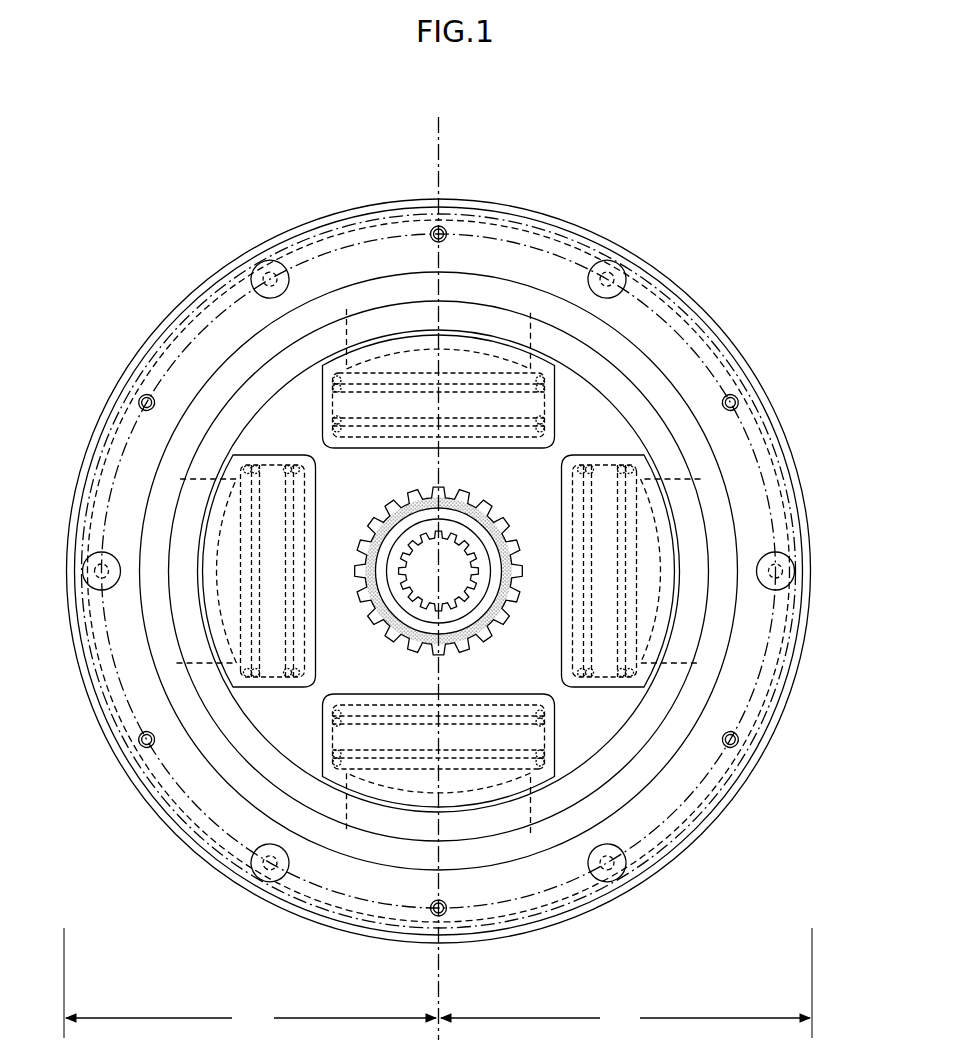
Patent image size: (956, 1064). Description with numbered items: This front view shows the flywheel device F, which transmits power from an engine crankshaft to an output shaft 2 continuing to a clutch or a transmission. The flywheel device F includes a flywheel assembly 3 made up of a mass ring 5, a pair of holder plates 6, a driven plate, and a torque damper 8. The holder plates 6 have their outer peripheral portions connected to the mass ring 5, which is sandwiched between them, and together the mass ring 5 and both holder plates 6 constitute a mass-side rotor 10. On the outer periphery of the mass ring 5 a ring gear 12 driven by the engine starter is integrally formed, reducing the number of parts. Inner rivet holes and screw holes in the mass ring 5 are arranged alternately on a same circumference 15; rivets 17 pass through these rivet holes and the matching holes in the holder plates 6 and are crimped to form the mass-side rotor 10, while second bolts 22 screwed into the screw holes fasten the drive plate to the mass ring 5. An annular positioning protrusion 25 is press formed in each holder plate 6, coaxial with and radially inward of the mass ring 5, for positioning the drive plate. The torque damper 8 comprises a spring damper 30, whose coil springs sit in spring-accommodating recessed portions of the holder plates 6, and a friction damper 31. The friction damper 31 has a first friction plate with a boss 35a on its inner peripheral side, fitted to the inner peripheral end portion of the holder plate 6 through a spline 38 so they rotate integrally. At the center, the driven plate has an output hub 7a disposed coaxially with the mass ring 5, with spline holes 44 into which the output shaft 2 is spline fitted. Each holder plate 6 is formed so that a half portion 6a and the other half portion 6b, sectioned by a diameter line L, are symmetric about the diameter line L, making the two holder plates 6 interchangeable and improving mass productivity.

The output shaft 2 is at (481, 125).
The flywheel assembly 3 is at (647, 203).
The mass ring 5 is at (776, 403).
The holder plate 6 is at (751, 483).
The output hub 7a is at (459, 533).
The torque damper 8 is at (439, 398).
The mass-side rotor 10 is at (822, 387).
The ring gear 12 is at (703, 292).
The same circumference 15 is at (334, 214).
The rivets 17 is at (253, 273).
The second bolts 22 is at (434, 226).
The annular positioning protrusion 25 is at (481, 284).
The spring damper 30 is at (423, 428).
The friction damper 31 is at (453, 491).
The boss 35a is at (498, 541).
The spline 38 is at (521, 598).
The spline holes 44 is at (417, 547).
The half portion 6a is at (438, 983).
The other half portion 6b is at (625, 1019).
The flywheel device F is at (543, 186).
The diameter line L is at (437, 993).